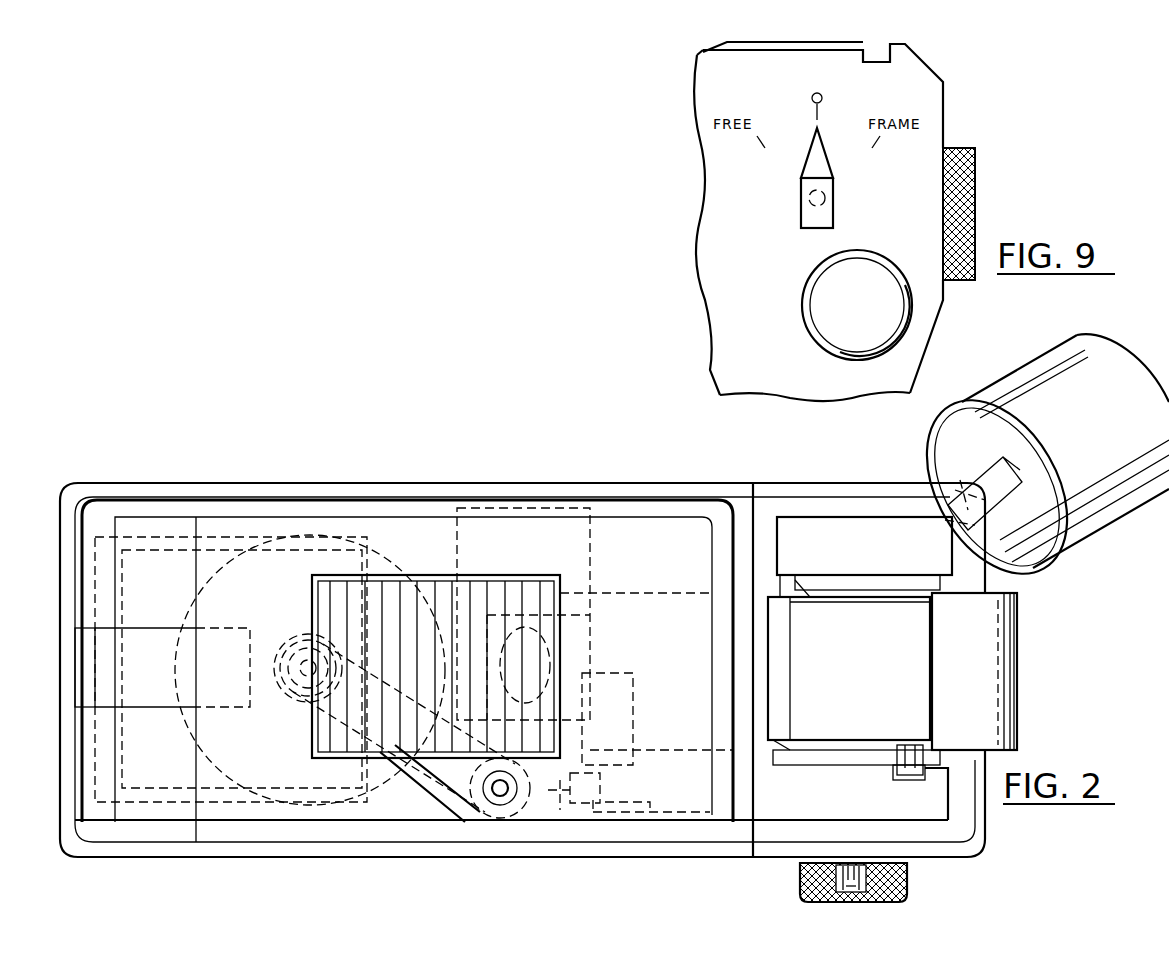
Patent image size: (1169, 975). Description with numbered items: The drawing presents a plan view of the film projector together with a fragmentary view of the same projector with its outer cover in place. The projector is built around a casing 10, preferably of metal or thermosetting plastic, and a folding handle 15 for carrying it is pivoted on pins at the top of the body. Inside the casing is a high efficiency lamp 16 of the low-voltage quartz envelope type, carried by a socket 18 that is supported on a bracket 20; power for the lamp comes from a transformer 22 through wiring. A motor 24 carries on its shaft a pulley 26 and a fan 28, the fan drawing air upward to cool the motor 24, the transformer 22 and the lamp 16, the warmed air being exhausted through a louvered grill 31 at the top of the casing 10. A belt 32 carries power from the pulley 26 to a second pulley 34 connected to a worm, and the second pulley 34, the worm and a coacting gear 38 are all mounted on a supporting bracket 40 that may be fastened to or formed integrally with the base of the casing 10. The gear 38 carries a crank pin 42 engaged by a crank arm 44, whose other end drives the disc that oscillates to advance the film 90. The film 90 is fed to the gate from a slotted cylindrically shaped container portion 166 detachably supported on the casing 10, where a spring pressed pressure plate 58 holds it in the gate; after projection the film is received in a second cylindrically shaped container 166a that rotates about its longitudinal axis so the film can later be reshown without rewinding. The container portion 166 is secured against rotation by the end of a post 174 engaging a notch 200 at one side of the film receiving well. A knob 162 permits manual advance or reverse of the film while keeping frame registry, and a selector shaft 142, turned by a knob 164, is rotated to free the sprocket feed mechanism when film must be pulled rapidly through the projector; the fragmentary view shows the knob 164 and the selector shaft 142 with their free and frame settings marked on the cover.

In FIG. 2, the casing 10 is at (635, 530).
In FIG. 2, the folding handle 15 is at (688, 500).
In FIG. 2, the lamp 16 is at (560, 622).
In FIG. 2, the socket 18 is at (545, 600).
In FIG. 2, the bracket 20 is at (520, 530).
In FIG. 2, the transformer 22 is at (222, 545).
In FIG. 2, the motor 24 is at (395, 580).
In FIG. 2, the pulley 26 is at (295, 700).
In FIG. 2, the fan 28 is at (185, 715).
In FIG. 2, the louvered grill 31 is at (490, 592).
In FIG. 2, the belt 32 is at (425, 785).
In FIG. 2, the second pulley 34 is at (445, 828).
In FIG. 2, the coacting gear 38 is at (525, 820).
In FIG. 2, the supporting bracket 40 is at (630, 700).
In FIG. 2, the crank pin 42 is at (590, 820).
In FIG. 2, the crank arm 44 is at (665, 820).
In FIG. 2, the pressure plate 58 is at (768, 597).
In FIG. 2, the film 90 is at (1010, 560).
In FIG. 9, the selector shaft 142 is at (825, 195).
In FIG. 9, the knob 162 is at (812, 300).
In FIG. 2, the knob 162 is at (800, 880).
In FIG. 9, the knob 164 is at (833, 215).
In FIG. 2, the knob 164 is at (895, 876).
In FIG. 2, the slotted cylindrically shaped container portion 166 is at (1012, 700).
In FIG. 2, the second cylindrically shaped container 166a is at (1110, 535).
In FIG. 2, the post 174 is at (893, 768).
In FIG. 9, the notch 200 is at (880, 55).
In FIG. 2, the notch 200 is at (905, 782).